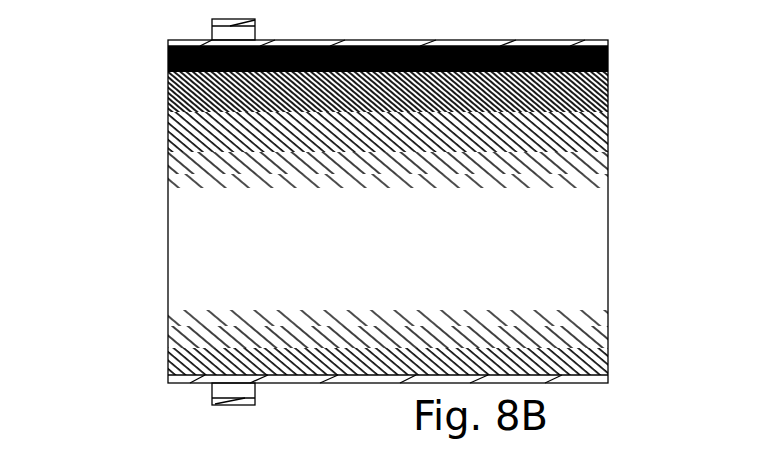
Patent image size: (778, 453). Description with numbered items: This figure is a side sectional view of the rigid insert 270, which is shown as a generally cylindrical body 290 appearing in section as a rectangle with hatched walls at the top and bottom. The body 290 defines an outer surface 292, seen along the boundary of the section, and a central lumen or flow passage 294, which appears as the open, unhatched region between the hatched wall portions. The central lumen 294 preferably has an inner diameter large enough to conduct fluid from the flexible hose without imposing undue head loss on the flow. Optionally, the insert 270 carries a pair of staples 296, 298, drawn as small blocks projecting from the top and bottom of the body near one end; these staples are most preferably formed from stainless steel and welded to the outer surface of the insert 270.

The insert 270 is at (618, 322).
The cylindrical body 290 is at (175, 222).
The outer surface 292 is at (547, 379).
The central lumen 294 is at (170, 302).
The staple 296 is at (220, 32).
The staple 298 is at (247, 390).